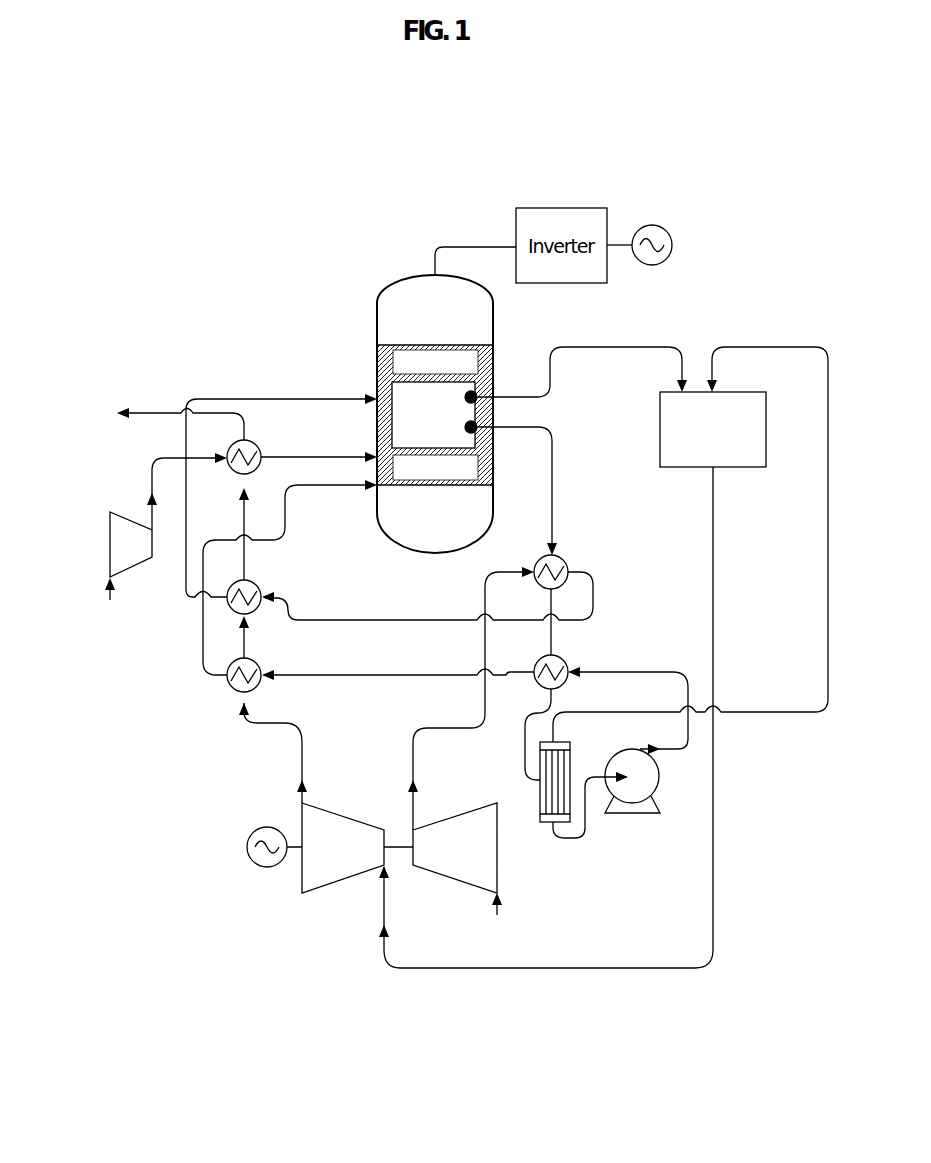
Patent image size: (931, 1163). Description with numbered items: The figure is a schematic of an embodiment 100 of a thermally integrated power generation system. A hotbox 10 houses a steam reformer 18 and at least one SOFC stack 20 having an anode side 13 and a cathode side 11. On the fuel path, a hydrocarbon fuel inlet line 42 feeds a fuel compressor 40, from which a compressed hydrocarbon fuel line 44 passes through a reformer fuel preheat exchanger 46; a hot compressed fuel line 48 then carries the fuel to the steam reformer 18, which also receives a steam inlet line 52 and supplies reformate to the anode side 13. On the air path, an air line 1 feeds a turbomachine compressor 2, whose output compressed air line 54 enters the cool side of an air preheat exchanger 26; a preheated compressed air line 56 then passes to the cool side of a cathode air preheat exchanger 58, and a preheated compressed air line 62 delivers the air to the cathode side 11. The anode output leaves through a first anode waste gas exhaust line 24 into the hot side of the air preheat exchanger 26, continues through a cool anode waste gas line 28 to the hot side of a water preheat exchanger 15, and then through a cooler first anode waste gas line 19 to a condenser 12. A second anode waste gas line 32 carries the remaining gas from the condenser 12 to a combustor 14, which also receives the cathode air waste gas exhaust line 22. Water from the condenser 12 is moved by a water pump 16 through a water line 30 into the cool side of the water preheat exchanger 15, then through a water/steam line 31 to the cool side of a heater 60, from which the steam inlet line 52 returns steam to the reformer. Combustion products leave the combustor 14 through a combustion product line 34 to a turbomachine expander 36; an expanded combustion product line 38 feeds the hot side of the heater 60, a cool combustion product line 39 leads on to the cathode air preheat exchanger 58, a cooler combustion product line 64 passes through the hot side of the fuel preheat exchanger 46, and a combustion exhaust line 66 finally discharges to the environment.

The air line 1 is at (513, 913).
The turbomachine compressor 2 is at (457, 883).
The hotbox 10 is at (380, 297).
The cathode side 11 is at (478, 392).
The condenser 12 is at (571, 745).
The anode side 13 is at (478, 431).
The combustor 14 is at (767, 427).
The water preheat exchanger 15 is at (541, 686).
The water pump 16 is at (660, 780).
The steam reformer 18 is at (378, 350).
The cooler first anode waste gas line 19 is at (551, 706).
The SOFC stack 20 is at (463, 412).
The cathode air waste gas exhaust line 22 is at (618, 345).
The first anode waste gas exhaust line 24 is at (552, 458).
The air preheat exchanger 26 is at (567, 556).
The cool anode waste gas line 28 is at (553, 640).
The water line 30 is at (640, 667).
The water/steam line 31 is at (380, 674).
The second anode waste gas line 32 is at (768, 710).
The combustion product line 34 is at (713, 598).
The turbomachine expander 36 is at (330, 890).
The expanded combustion product line 38 is at (304, 757).
The cool combustion product line 39 is at (247, 630).
The fuel compressor 40 is at (107, 548).
The hydrocarbon fuel inlet line 42 is at (107, 585).
The compressed hydrocarbon fuel line 44 is at (152, 470).
The reformer fuel preheat exchanger 46 is at (257, 440).
The hot compressed fuel line 48 is at (328, 454).
The steam inlet line 52 is at (203, 676).
The output compressed air line 54 is at (413, 740).
The preheated compressed air line 56 is at (403, 618).
The cathode air preheat exchanger 58 is at (258, 586).
The heater 60 is at (257, 687).
The preheated compressed air line 62 is at (187, 517).
The cooler combustion product line 64 is at (247, 508).
The combustion exhaust line 66 is at (138, 402).
The thermally integrated power generation system 100 is at (730, 254).